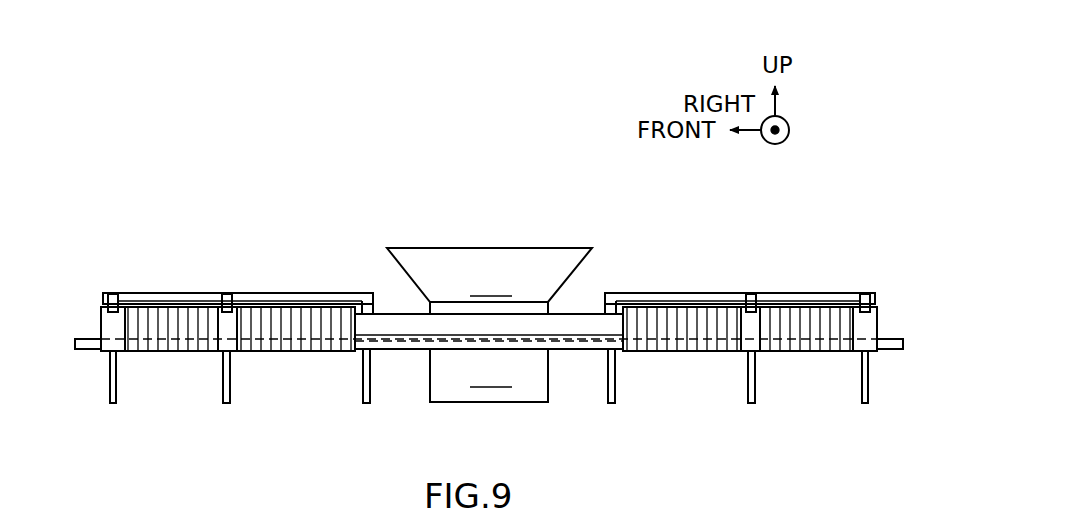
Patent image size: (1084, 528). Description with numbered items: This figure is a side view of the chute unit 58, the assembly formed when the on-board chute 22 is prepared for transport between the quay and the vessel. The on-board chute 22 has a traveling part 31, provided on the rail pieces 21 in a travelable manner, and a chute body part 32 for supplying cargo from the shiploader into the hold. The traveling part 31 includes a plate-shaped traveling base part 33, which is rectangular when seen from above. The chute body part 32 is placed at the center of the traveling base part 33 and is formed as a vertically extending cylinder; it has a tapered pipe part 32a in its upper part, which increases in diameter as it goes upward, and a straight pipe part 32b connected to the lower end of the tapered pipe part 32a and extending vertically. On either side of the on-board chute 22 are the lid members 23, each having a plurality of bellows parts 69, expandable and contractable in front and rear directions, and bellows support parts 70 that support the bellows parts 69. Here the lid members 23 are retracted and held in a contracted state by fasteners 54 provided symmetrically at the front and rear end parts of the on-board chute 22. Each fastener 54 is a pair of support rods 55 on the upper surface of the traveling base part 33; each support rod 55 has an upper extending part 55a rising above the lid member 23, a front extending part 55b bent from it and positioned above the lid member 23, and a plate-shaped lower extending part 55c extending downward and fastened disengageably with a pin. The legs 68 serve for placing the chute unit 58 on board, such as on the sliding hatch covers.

The rail piece 21 is at (86, 343).
The on-board chute 22 is at (505, 242).
The lid member 23 is at (260, 306).
The traveling part 31 is at (441, 312).
The chute body part 32 is at (513, 293).
The tapered pipe part 32a is at (489, 275).
The straight pipe part 32b is at (489, 375).
The traveling base part 33 is at (534, 327).
The fastener 54 is at (106, 284).
The support rod 55 is at (180, 291).
The upper extending part 55a is at (374, 310).
The front extending part 55b is at (287, 293).
The lower extending part 55c is at (116, 292).
The chute unit 58 is at (363, 243).
The leg 68 is at (118, 388).
The bellows part 69 is at (107, 348).
The bellows support part 70 is at (165, 352).